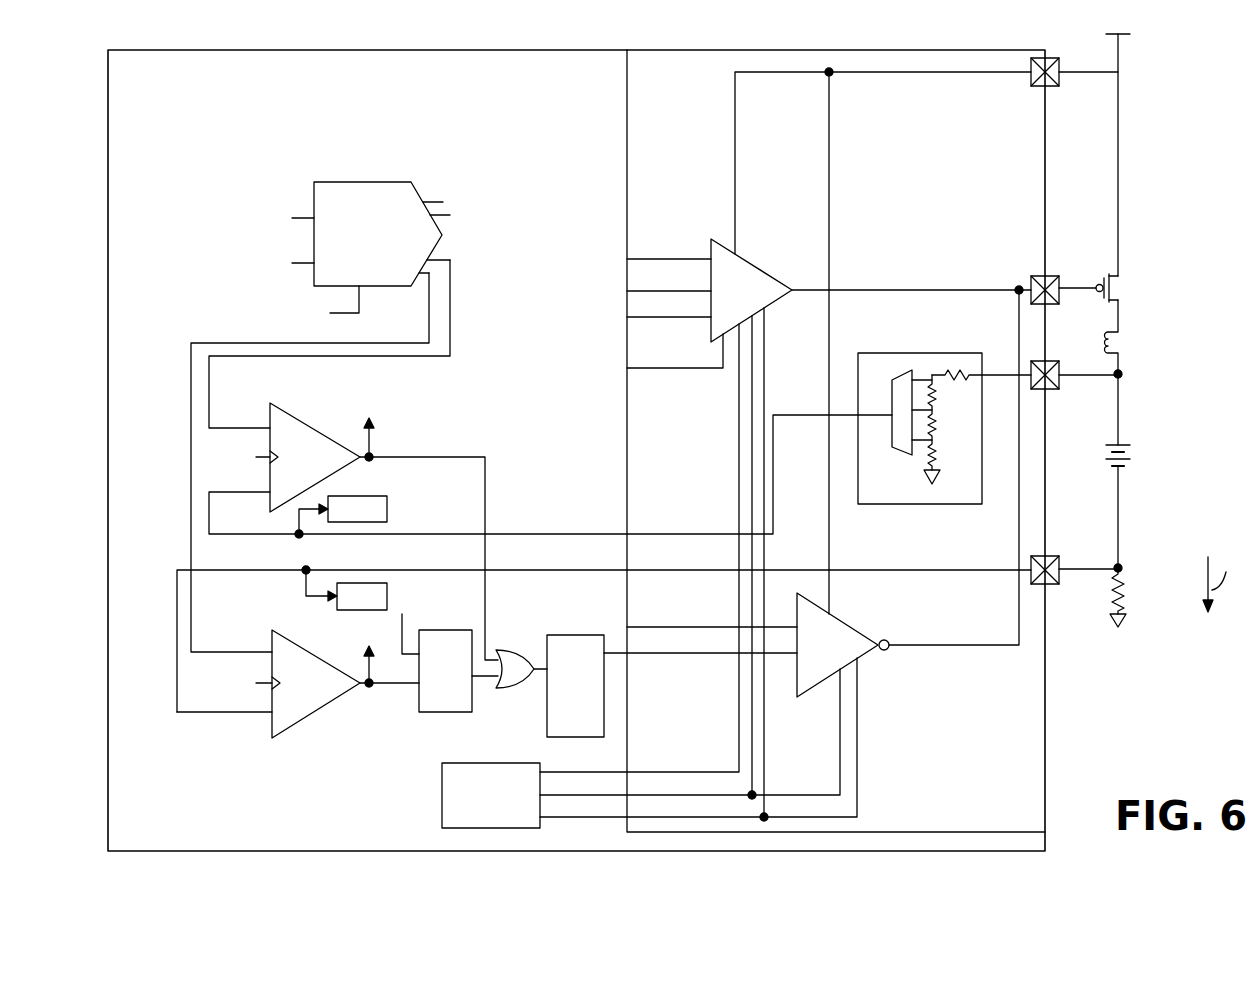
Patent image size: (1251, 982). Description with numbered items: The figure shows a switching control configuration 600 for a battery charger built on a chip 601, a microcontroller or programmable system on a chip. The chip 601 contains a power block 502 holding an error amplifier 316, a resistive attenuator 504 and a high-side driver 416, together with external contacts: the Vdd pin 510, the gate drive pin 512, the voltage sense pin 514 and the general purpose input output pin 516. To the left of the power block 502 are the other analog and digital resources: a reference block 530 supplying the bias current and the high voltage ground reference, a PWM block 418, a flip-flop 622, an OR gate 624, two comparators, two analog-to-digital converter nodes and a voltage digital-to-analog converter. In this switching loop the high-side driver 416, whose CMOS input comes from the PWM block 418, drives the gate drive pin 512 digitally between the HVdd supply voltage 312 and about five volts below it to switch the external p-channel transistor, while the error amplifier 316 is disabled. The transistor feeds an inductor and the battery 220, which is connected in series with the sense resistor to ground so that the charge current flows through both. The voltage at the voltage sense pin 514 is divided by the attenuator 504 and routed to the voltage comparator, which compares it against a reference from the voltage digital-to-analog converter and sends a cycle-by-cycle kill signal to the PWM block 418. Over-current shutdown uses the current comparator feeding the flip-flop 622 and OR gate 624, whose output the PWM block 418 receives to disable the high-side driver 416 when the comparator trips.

The switching control configuration 600 is at (508, 37).
The chip 601 is at (177, 831).
The power block 502 is at (979, 807).
The error amplifier 316 is at (756, 310).
The high-side driver 416 is at (836, 660).
The PWM block 418 is at (585, 707).
The flip-flop 622 is at (465, 707).
The OR gate 624 is at (524, 676).
The reference block 530 is at (505, 816).
The attenuator 504 is at (907, 495).
The Vdd pin 510 is at (1073, 91).
The gate drive pin 512 is at (1072, 303).
The voltage sense pin 514 is at (1070, 390).
The general purpose input output pin 516 is at (1070, 586).
The HVdd supply voltage 312 is at (1110, 145).
The battery 220 is at (1093, 471).